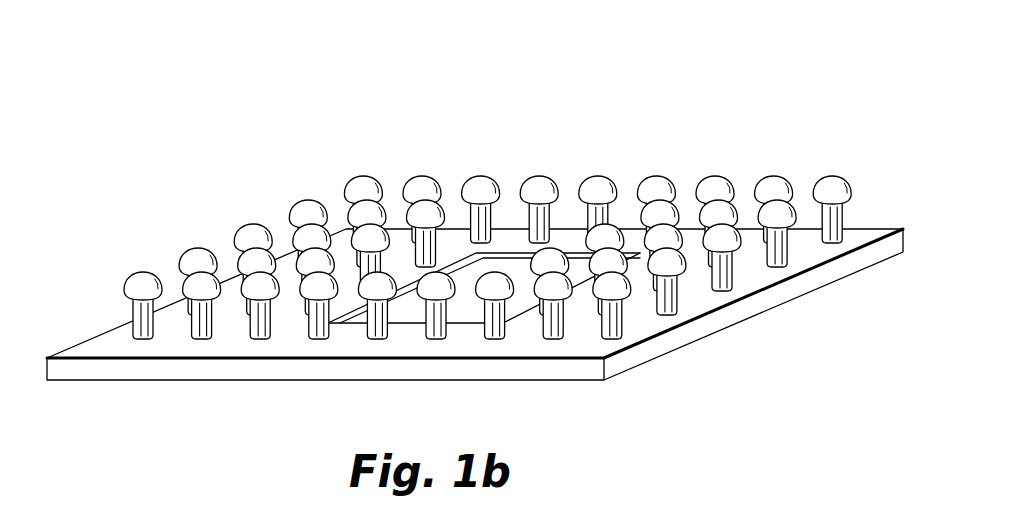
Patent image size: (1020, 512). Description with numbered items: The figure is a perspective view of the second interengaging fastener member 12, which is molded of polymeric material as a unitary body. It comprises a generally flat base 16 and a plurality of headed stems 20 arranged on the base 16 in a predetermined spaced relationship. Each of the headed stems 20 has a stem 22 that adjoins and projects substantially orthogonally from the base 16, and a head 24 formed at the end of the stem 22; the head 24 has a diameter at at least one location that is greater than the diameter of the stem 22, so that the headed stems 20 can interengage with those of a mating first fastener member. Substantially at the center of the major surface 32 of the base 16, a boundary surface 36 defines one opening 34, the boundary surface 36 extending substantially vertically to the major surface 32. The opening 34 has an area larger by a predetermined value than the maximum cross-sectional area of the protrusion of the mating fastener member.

The second interengaging fastener member 12 is at (600, 104).
The base 16 is at (678, 340).
The headed stems 20 is at (720, 180).
The stem 22 is at (250, 322).
The head 24 is at (412, 177).
The major surface 32 is at (391, 344).
The opening 34 is at (470, 312).
The boundary surface 36 is at (466, 255).